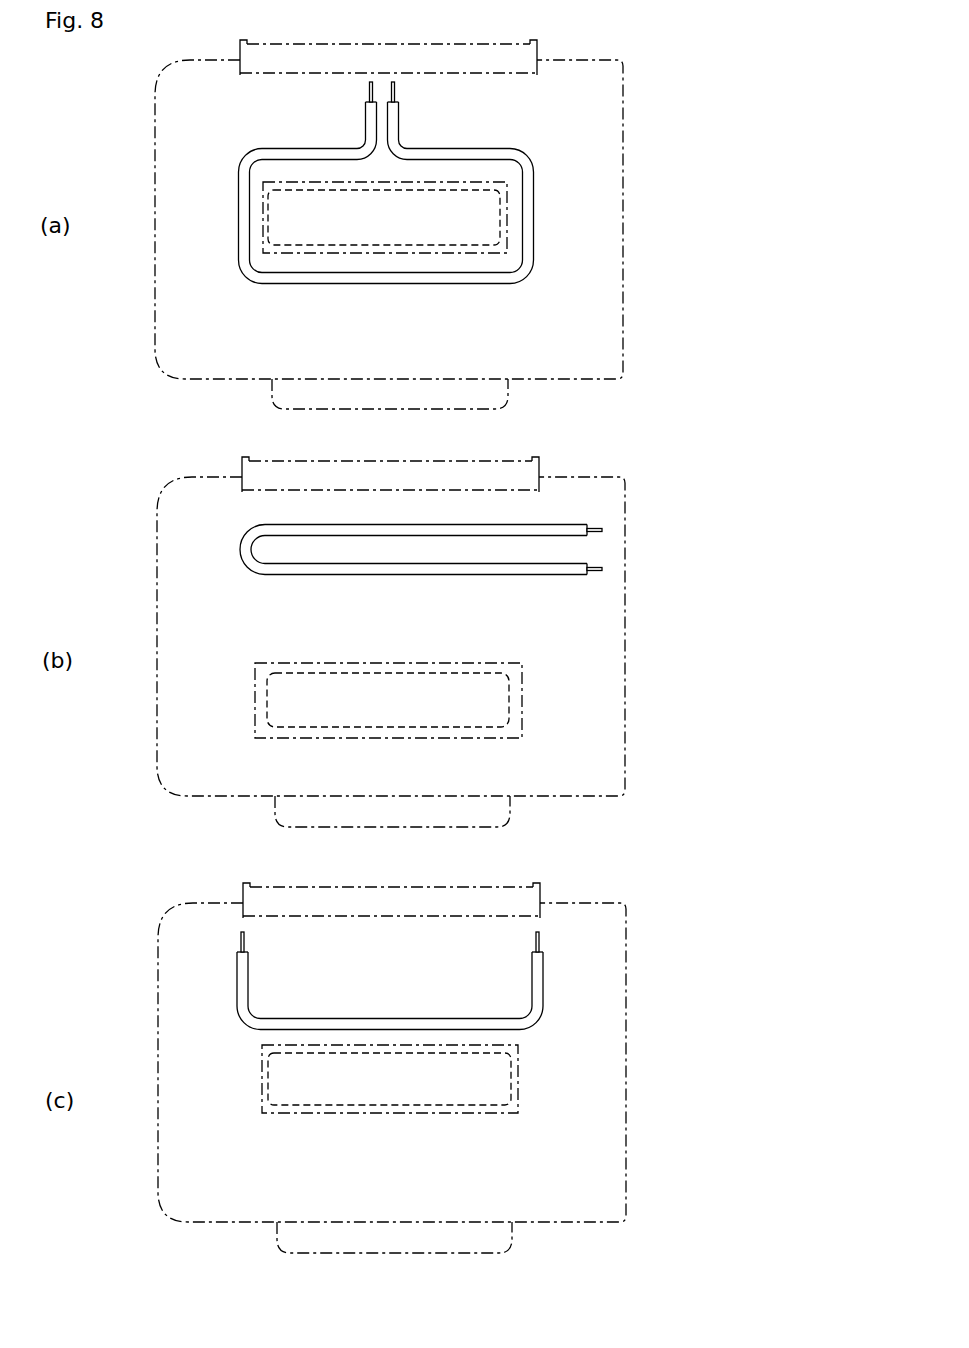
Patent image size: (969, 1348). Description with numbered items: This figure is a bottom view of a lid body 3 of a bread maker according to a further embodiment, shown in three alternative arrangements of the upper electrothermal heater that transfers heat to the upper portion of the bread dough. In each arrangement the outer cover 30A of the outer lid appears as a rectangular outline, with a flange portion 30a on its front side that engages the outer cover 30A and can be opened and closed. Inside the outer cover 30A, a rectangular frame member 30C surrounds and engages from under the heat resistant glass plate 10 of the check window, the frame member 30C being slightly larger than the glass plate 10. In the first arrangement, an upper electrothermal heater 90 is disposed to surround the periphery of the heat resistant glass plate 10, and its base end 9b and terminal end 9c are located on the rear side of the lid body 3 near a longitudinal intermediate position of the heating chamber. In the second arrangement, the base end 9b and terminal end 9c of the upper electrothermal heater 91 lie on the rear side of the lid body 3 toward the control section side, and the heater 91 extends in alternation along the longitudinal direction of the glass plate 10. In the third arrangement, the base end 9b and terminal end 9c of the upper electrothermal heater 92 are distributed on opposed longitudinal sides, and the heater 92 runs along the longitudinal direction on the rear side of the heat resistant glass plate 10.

The lid body 3 is at (632, 100).
The outer cover 30A is at (623, 236).
The frame member 30C is at (462, 255).
The flange portion 30a is at (501, 404).
The heat resistant glass plate 10 is at (355, 245).
The upper electrothermal heater 90 is at (238, 235).
The upper electrothermal heater 91 is at (247, 558).
The upper electrothermal heater 92 is at (350, 1022).
The base end 9b is at (368, 85).
The terminal end 9c is at (398, 84).